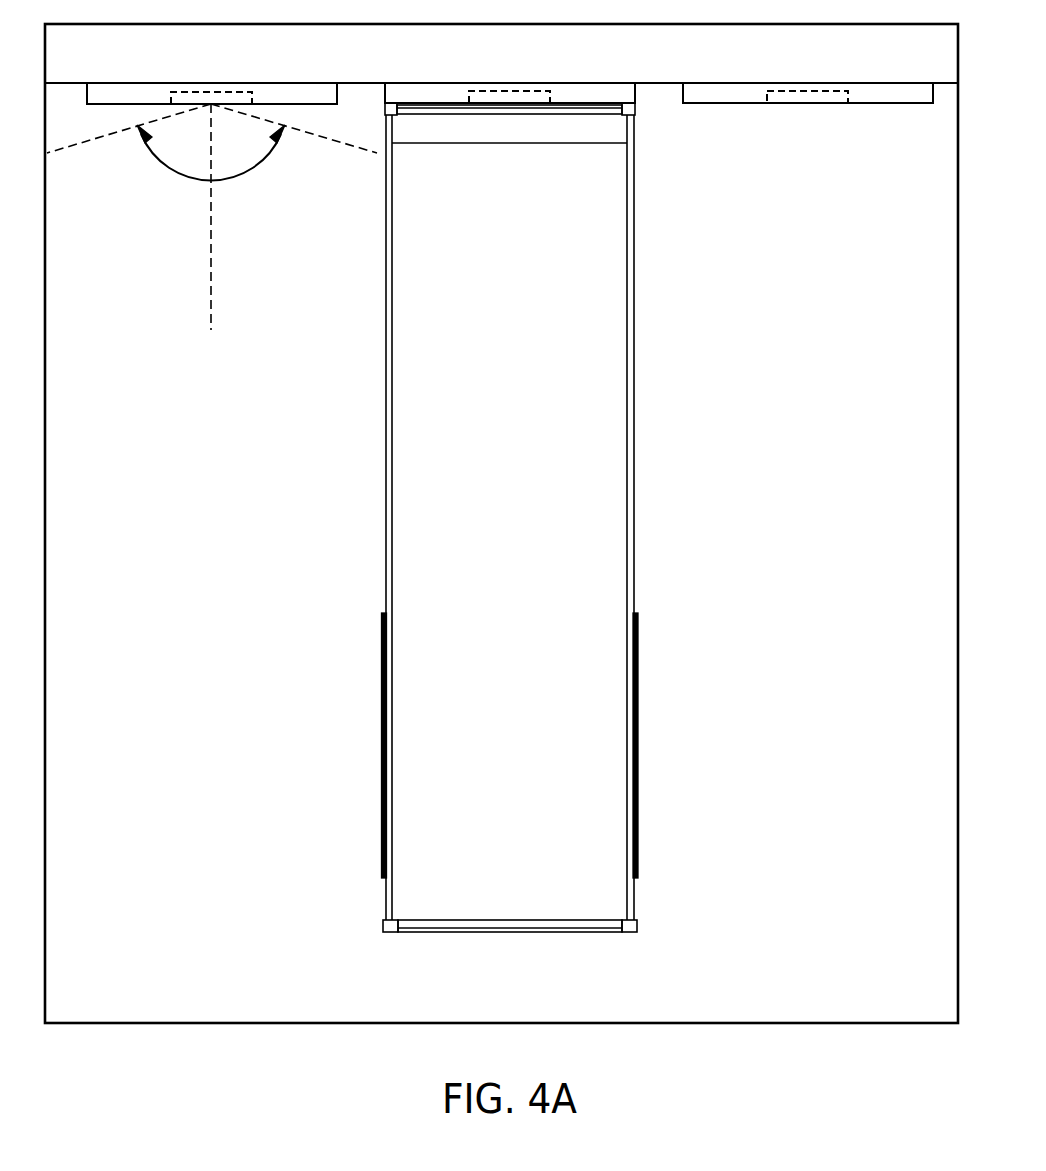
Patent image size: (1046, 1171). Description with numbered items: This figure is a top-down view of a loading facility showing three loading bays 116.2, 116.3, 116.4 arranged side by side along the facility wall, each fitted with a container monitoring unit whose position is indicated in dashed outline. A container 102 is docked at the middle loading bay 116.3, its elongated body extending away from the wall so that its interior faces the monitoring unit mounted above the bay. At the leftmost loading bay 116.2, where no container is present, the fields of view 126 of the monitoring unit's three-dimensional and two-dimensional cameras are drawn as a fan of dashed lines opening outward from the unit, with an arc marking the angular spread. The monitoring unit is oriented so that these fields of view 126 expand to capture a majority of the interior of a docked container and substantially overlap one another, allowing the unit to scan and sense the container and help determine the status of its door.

The container 102 is at (420, 484).
The loading bay 116.2 is at (135, 80).
The loading bay 116.3 is at (471, 78).
The loading bay 116.4 is at (771, 78).
The fields of view 126 is at (237, 180).